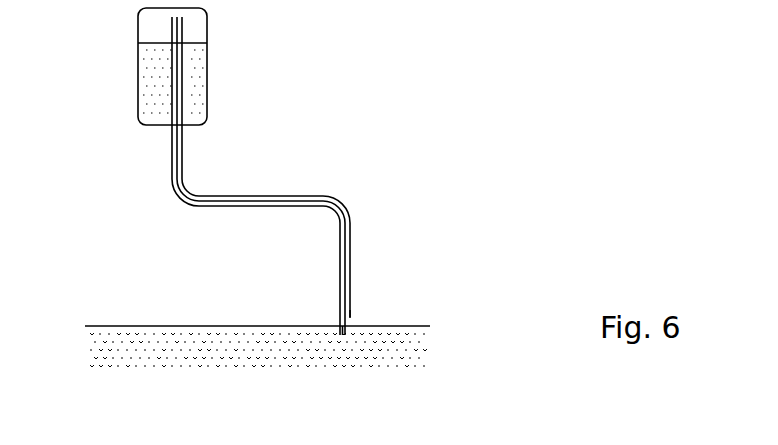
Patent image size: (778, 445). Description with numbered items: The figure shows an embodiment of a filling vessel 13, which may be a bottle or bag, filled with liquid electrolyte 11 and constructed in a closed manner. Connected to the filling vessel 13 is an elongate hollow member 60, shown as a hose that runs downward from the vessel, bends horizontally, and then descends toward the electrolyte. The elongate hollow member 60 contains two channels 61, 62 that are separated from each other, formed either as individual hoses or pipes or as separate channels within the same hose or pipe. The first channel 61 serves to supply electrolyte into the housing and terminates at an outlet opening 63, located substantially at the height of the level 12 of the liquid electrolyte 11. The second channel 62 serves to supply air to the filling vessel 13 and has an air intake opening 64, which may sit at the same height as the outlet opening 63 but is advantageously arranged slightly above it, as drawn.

The liquid electrolyte 11 is at (421, 351).
The level 12 is at (95, 325).
The filling vessel 13 is at (138, 72).
The elongate hollow member 60 is at (321, 176).
The first channel 61 is at (339, 261).
The second channel 62 is at (351, 232).
The outlet opening 63 is at (338, 329).
The air intake opening 64 is at (352, 318).